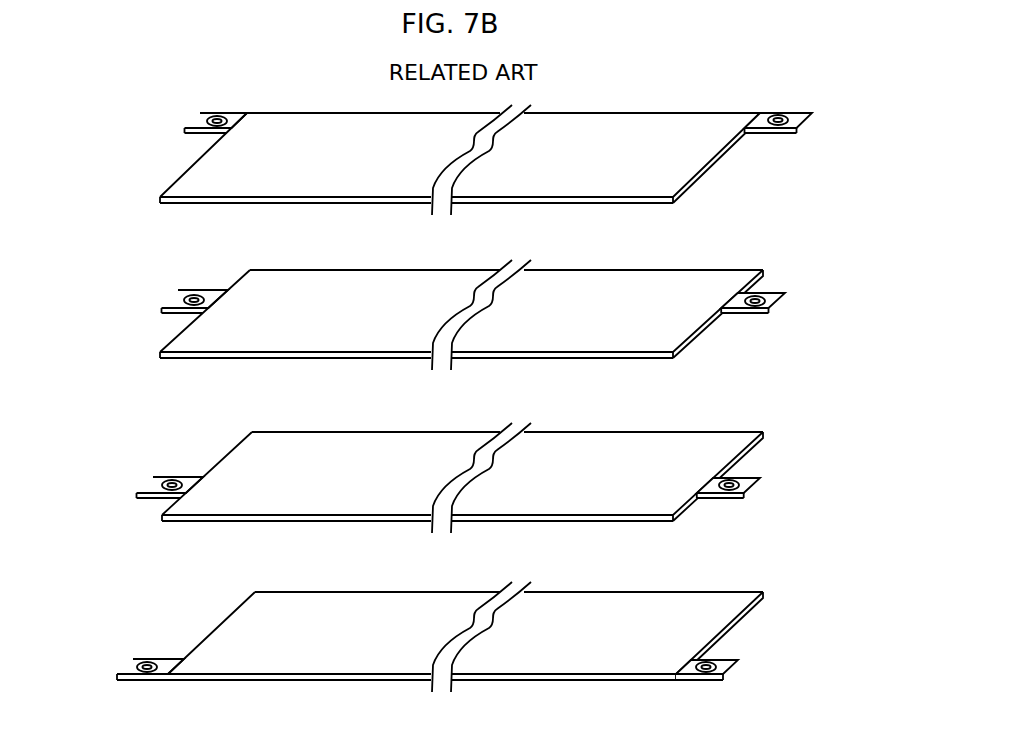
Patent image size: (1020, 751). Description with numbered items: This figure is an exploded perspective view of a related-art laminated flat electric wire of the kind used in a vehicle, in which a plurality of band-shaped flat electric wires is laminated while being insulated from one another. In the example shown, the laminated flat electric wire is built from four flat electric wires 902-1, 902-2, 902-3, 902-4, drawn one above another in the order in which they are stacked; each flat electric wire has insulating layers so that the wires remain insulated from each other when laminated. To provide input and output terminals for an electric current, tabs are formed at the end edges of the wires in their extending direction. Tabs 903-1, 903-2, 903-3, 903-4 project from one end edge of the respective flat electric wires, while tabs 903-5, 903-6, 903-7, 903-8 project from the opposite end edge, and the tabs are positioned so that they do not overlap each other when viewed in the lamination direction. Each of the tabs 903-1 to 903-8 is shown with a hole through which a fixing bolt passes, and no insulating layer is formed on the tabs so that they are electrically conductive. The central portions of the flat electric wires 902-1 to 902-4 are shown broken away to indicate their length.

The flat electric wire 902-1 is at (303, 200).
The flat electric wire 902-2 is at (305, 356).
The flat electric wire 902-3 is at (305, 518).
The flat electric wire 902-4 is at (305, 680).
The tab 903-1 is at (797, 128).
The tab 903-2 is at (783, 304).
The tab 903-3 is at (760, 488).
The tab 903-4 is at (721, 676).
The tab 903-5 is at (200, 114).
The tab 903-6 is at (178, 291).
The tab 903-7 is at (153, 478).
The tab 903-8 is at (133, 660).